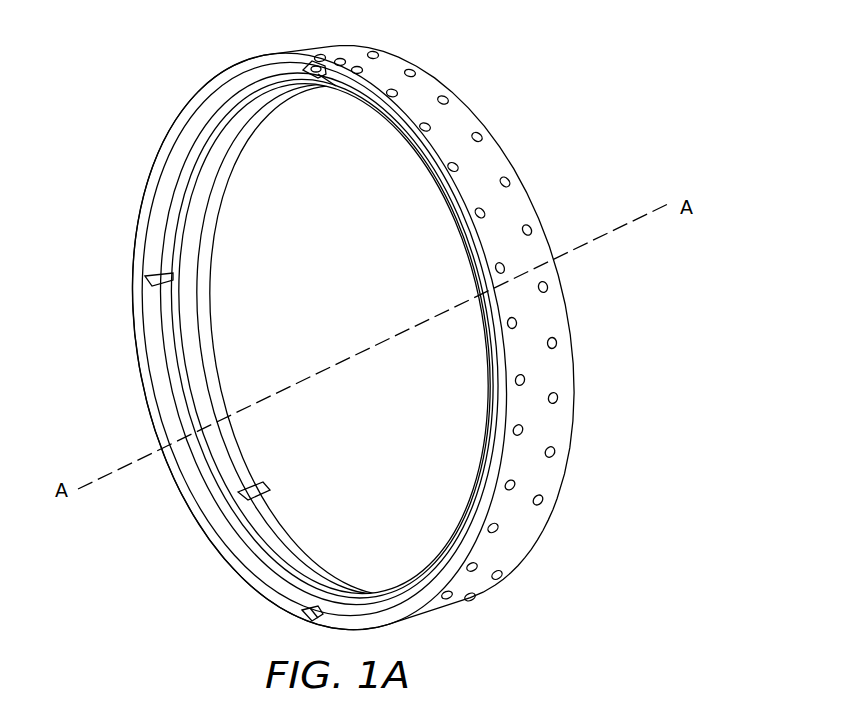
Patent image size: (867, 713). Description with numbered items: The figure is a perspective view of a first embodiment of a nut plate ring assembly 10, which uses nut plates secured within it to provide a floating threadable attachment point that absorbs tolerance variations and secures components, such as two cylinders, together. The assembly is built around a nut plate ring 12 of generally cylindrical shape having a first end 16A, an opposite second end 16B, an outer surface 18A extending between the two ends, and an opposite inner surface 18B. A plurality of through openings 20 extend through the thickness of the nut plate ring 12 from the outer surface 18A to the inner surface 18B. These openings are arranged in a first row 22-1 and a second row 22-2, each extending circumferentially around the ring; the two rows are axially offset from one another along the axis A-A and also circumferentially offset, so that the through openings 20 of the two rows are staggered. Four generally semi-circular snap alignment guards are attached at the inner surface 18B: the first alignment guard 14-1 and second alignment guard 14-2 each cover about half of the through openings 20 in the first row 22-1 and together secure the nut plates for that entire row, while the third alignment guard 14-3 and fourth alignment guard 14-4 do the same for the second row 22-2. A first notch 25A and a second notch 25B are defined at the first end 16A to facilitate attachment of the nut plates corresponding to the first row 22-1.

The nut plate ring assembly 10 is at (499, 48).
The nut plate ring 12 is at (567, 440).
The first alignment guard 14-1 is at (158, 222).
The second alignment guard 14-2 is at (158, 398).
The third alignment guard 14-3 is at (214, 359).
The fourth alignment guard 14-4 is at (305, 539).
The first end 16A is at (212, 96).
The second end 16B is at (448, 84).
The outer surface 18A is at (478, 128).
The inner surface 18B is at (412, 143).
The through openings 20 is at (507, 323).
The first row 22-1 is at (446, 168).
The second row 22-2 is at (492, 125).
The first notch 25A is at (312, 70).
The second notch 25B is at (305, 617).